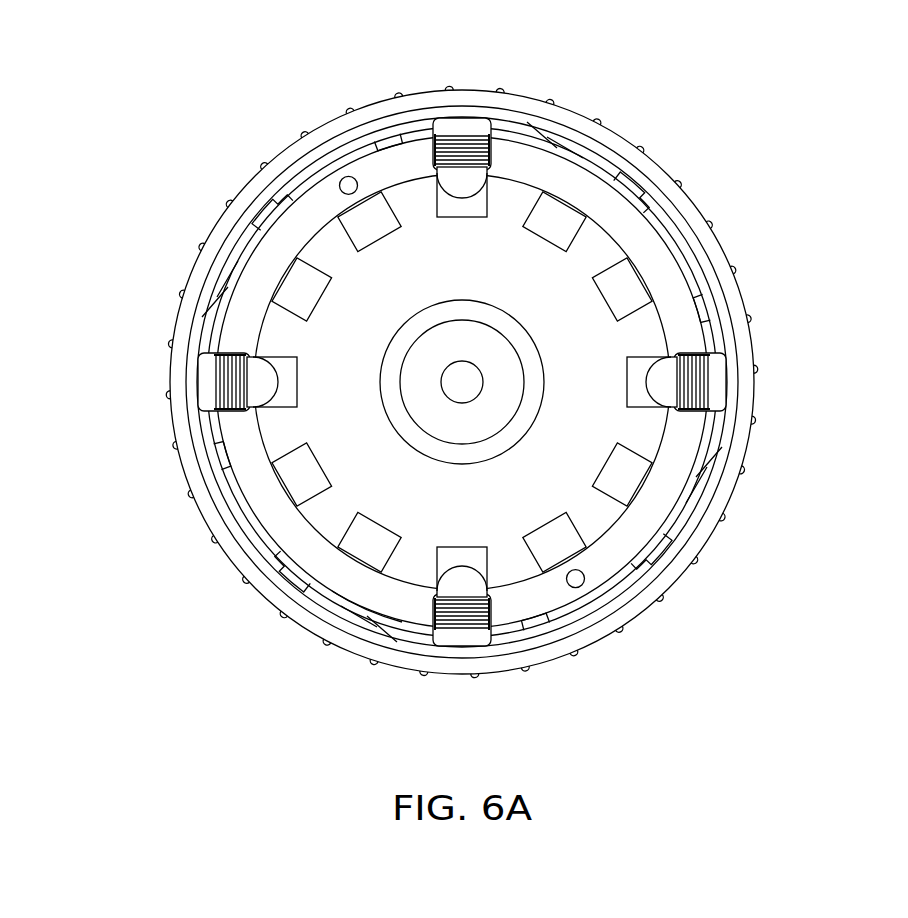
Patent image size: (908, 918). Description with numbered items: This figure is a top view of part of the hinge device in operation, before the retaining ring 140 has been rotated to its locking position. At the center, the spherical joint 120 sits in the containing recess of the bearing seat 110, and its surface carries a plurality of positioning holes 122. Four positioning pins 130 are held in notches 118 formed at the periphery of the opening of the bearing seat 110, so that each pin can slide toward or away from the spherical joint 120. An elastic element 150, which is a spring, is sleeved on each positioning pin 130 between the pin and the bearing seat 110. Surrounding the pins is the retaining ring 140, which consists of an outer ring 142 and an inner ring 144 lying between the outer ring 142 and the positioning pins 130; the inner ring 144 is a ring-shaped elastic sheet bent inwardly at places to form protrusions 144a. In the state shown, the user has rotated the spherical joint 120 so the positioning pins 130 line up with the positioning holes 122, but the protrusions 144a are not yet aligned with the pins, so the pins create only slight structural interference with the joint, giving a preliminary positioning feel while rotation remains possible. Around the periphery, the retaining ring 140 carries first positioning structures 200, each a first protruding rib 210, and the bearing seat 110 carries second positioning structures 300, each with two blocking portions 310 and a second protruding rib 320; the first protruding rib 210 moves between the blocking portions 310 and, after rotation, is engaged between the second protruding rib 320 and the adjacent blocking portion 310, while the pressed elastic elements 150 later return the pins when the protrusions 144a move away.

The bearing seat 110 is at (253, 278).
The notches 118 is at (222, 380).
The spherical joint 120 is at (577, 427).
The positioning holes 122 is at (612, 269).
The positioning pins 130 is at (470, 187).
The retaining ring 140 is at (838, 140).
The outer ring 142 is at (690, 215).
The inner ring 144 is at (650, 178).
The protrusions 144a is at (590, 150).
The elastic elements 150 is at (460, 134).
The first positioning structure 200 is at (391, 626).
The first protruding rib 210 is at (255, 585).
The second positioning structure 300 is at (94, 447).
The blocking portions 310 is at (207, 432).
The second protruding rib 320 is at (217, 467).